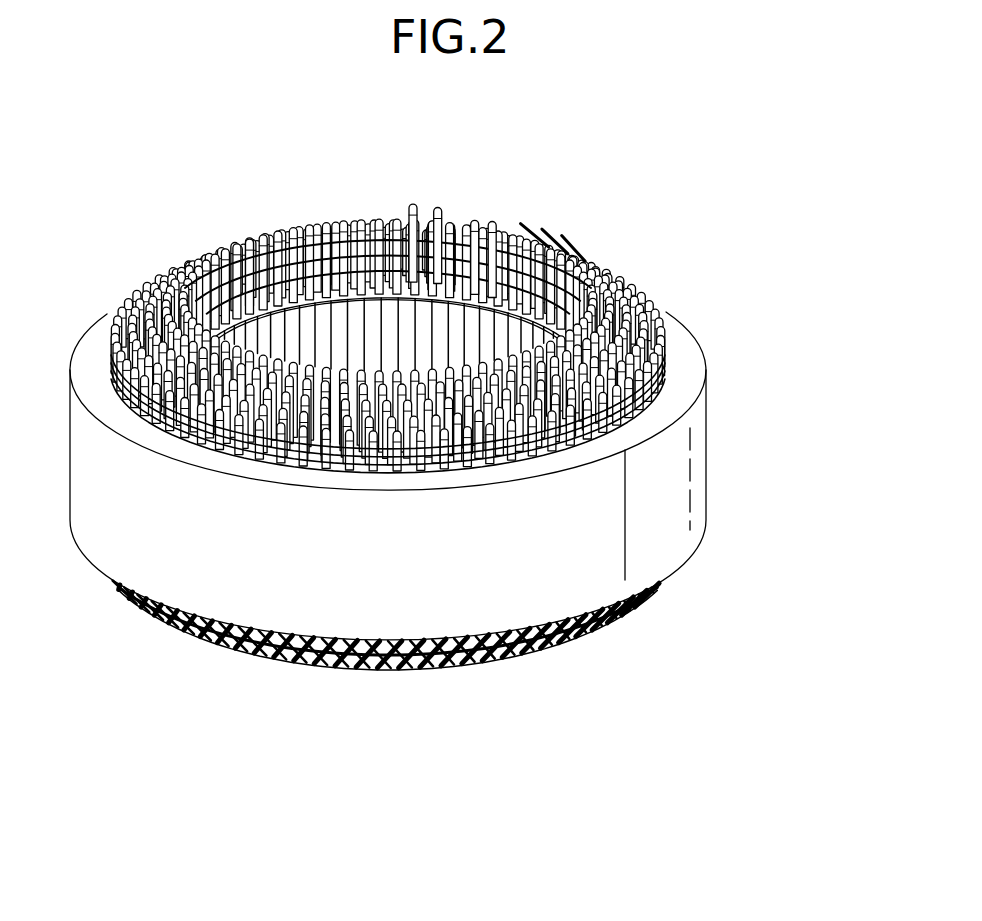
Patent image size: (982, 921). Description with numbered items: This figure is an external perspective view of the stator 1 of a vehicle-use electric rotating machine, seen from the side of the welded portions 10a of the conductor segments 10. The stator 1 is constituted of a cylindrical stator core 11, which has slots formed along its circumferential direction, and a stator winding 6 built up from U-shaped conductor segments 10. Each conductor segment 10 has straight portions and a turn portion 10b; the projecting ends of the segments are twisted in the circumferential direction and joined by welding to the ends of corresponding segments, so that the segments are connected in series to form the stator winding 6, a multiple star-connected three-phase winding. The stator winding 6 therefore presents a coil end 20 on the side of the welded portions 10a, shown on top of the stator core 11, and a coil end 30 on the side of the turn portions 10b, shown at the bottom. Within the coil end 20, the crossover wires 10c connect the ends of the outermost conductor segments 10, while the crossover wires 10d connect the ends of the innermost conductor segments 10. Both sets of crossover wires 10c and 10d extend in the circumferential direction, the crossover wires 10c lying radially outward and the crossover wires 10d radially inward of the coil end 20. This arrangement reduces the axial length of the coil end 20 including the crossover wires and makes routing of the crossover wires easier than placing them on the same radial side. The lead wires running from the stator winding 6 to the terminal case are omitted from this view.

The stator 1 is at (322, 193).
The stator winding 6 is at (487, 210).
The conductor segment 10 is at (468, 667).
The welded portions 10a is at (413, 207).
The turn portion 10b is at (323, 668).
The crossover wires 10c is at (557, 427).
The crossover wires 10d is at (550, 233).
The stator core 11 is at (685, 538).
The coil end 20 is at (455, 306).
The coil end 30 is at (373, 691).